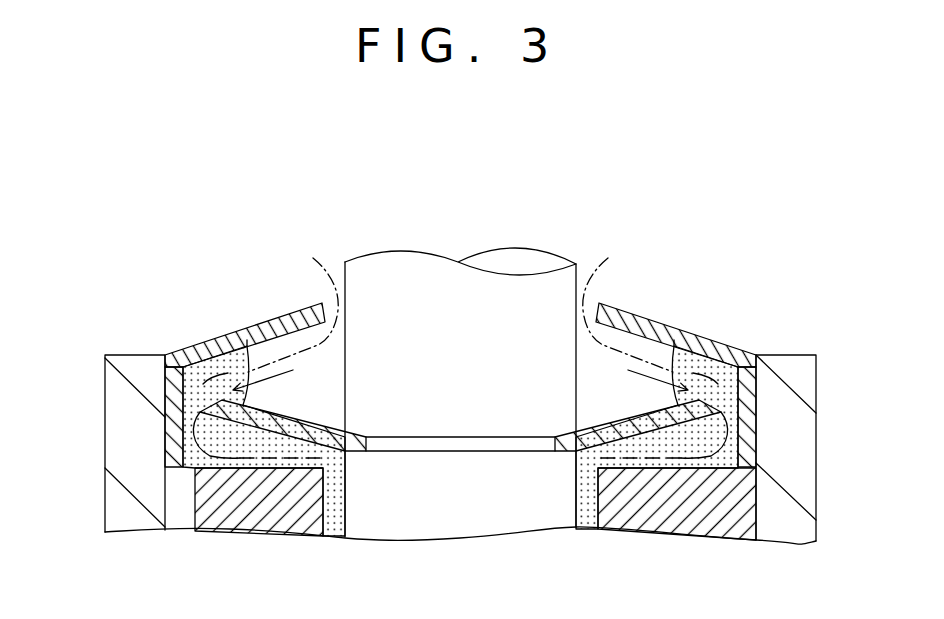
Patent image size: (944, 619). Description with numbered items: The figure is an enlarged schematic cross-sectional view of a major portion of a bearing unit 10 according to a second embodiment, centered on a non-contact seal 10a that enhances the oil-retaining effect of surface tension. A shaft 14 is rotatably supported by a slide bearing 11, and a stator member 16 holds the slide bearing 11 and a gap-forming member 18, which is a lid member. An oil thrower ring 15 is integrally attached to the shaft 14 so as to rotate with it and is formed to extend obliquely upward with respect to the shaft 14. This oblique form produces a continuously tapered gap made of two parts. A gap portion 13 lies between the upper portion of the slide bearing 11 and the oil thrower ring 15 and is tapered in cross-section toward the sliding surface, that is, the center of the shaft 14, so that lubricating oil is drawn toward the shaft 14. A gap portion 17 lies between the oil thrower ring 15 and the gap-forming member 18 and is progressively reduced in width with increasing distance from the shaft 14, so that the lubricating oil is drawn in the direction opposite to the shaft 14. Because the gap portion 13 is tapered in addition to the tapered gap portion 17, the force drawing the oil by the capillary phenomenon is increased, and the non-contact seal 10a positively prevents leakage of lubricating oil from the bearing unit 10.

The bearing unit 10 is at (199, 211).
The non-contact seal 10a is at (675, 232).
The slide bearing 11 is at (183, 503).
The gap portion 13 is at (230, 447).
The shaft 14 is at (457, 295).
The oil thrower ring 15 is at (207, 383).
The stator member 16 is at (780, 452).
The gap portion 17 is at (290, 402).
The gap-forming member 18 is at (247, 340).